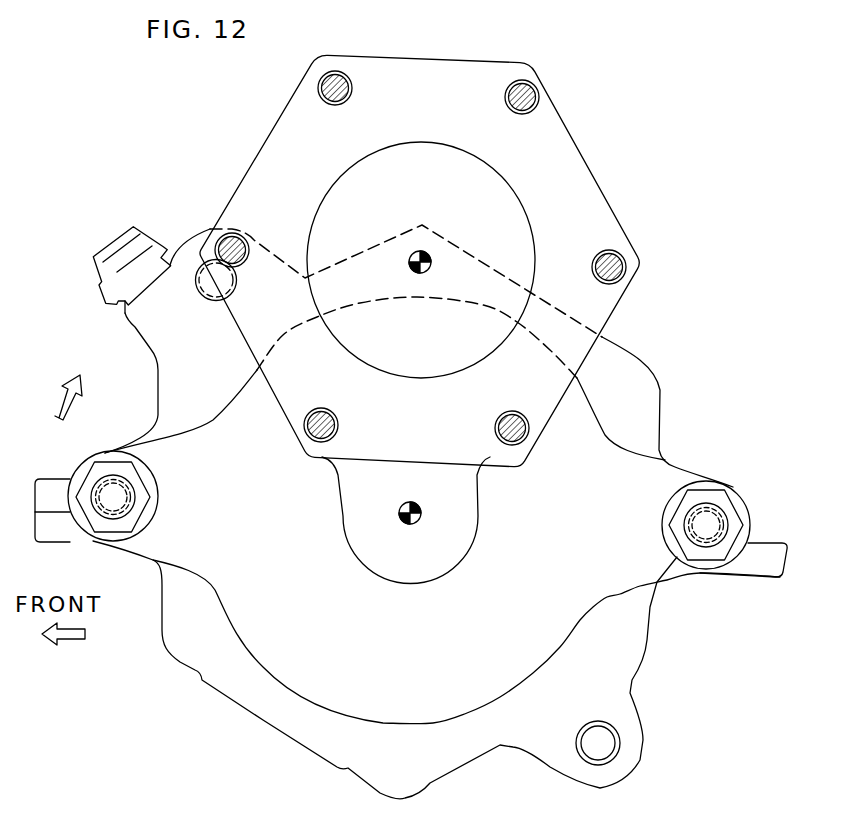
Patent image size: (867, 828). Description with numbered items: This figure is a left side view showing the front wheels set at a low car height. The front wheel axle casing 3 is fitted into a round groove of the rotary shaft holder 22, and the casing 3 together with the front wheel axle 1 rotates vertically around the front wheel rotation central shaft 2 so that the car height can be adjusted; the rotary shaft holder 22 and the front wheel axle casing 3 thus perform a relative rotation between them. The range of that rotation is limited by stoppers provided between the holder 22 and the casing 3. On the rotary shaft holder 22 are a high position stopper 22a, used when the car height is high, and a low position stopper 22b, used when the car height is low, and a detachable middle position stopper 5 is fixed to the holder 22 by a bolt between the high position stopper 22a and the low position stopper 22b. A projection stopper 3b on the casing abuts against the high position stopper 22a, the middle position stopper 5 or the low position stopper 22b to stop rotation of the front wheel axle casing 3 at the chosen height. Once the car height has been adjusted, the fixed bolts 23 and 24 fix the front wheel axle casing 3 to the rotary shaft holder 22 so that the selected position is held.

The front wheel axle 1 is at (424, 352).
The front wheel rotation central shaft 2 is at (416, 524).
The front wheel axle casing 3 is at (390, 725).
The projection stopper 3b is at (50, 479).
The middle position stopper 5 is at (163, 229).
The rotary shaft holder 22 is at (263, 720).
The high position stopper 22a is at (790, 550).
The low position stopper 22b is at (53, 535).
The fixed bolt 23 is at (683, 540).
The fixed bolt 24 is at (149, 485).